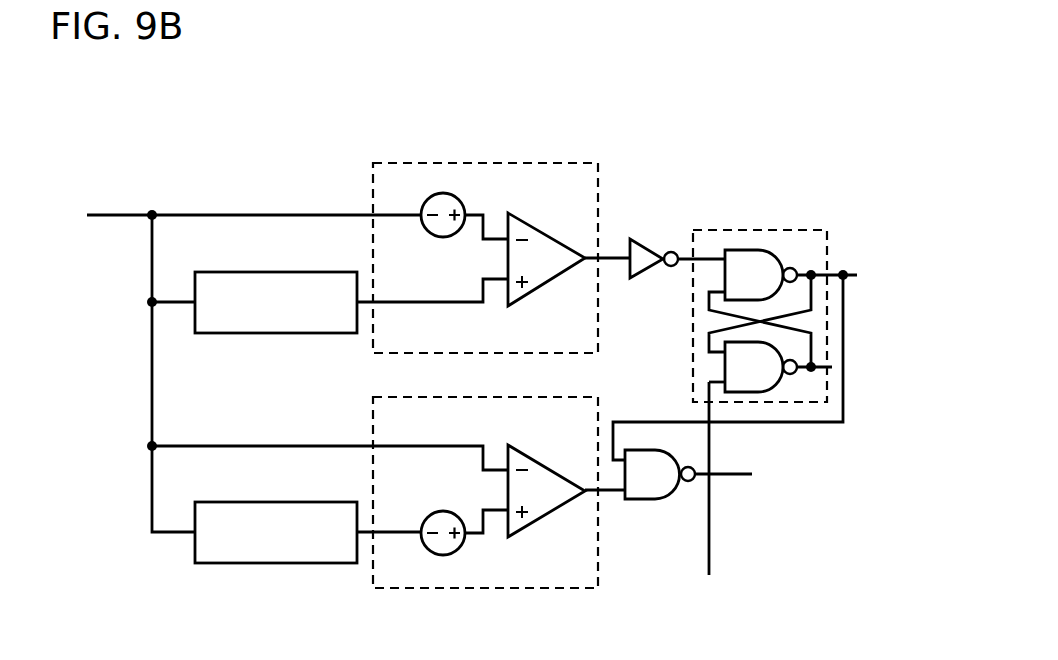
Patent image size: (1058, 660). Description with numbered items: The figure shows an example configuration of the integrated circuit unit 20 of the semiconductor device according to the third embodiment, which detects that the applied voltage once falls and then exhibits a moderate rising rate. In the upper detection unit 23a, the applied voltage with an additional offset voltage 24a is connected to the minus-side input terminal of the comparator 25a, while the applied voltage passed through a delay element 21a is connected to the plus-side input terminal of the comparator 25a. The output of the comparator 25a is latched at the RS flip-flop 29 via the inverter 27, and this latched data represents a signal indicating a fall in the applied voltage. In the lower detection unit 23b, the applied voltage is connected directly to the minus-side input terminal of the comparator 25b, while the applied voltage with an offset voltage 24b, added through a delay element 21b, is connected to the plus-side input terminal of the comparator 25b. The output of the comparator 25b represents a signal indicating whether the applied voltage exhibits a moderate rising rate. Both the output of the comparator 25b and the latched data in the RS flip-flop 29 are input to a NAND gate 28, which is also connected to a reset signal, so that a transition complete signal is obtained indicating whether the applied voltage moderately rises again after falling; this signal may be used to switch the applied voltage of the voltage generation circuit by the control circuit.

The integrated circuit unit 20 is at (589, 143).
The delay element 21a is at (275, 334).
The delay element 21b is at (275, 565).
The detection unit 23a is at (488, 162).
The detection unit 23b is at (493, 590).
The offset voltage 24a is at (443, 237).
The offset voltage 24b is at (443, 511).
The comparator 25a is at (541, 229).
The comparator 25b is at (543, 462).
The inverter 27 is at (651, 240).
The NAND gate 28 is at (645, 500).
The RS flip-flop 29 is at (762, 230).